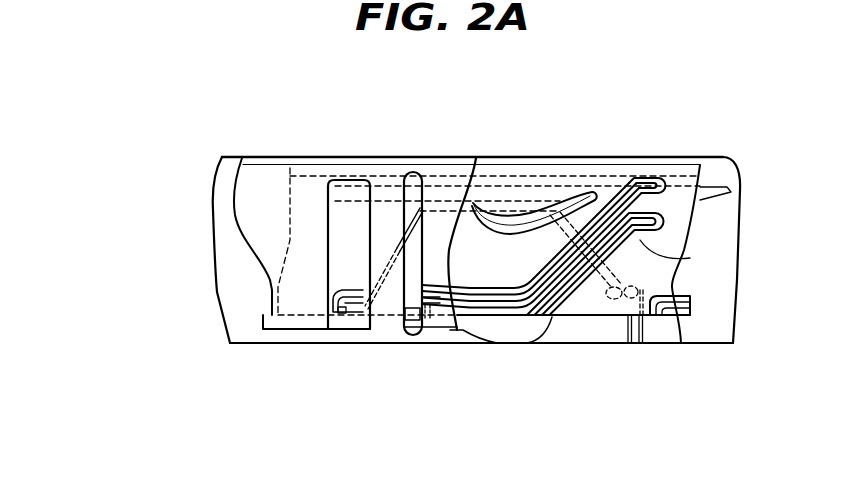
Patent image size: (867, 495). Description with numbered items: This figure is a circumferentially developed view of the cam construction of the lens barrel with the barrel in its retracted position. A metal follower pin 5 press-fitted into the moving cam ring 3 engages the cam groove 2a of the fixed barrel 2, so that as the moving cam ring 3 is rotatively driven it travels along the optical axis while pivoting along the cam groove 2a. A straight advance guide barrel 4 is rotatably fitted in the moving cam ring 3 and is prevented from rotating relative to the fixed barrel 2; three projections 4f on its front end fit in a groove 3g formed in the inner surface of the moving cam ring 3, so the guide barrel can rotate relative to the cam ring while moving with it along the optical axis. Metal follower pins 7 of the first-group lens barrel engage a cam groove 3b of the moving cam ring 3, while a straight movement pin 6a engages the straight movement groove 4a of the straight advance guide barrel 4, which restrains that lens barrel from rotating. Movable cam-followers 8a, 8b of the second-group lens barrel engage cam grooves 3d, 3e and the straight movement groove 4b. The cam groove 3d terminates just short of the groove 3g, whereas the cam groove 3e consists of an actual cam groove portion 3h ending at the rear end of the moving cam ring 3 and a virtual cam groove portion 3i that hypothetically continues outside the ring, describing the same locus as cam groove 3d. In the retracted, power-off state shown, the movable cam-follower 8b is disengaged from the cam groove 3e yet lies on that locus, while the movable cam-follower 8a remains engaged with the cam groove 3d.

The fixed barrel 2 is at (215, 232).
The cam groove 2a is at (641, 343).
The moving cam ring 3 is at (552, 190).
The cam groove 3b is at (505, 225).
The cam groove 3d is at (483, 300).
The cam groove 3e is at (568, 317).
The groove 3g is at (619, 176).
The actual cam groove portion 3h is at (690, 258).
The virtual cam groove portion 3i is at (552, 318).
The straight advance guide barrel 4 is at (267, 182).
The straight movement groove 4a is at (337, 212).
The straight movement groove 4b is at (409, 170).
The projection 4f is at (388, 172).
The follower pin 5 is at (650, 315).
The straight movement pin 6a is at (372, 312).
The follower pin 7 is at (330, 307).
The movable cam-follower 8a is at (430, 305).
The movable cam-follower 8b is at (412, 330).